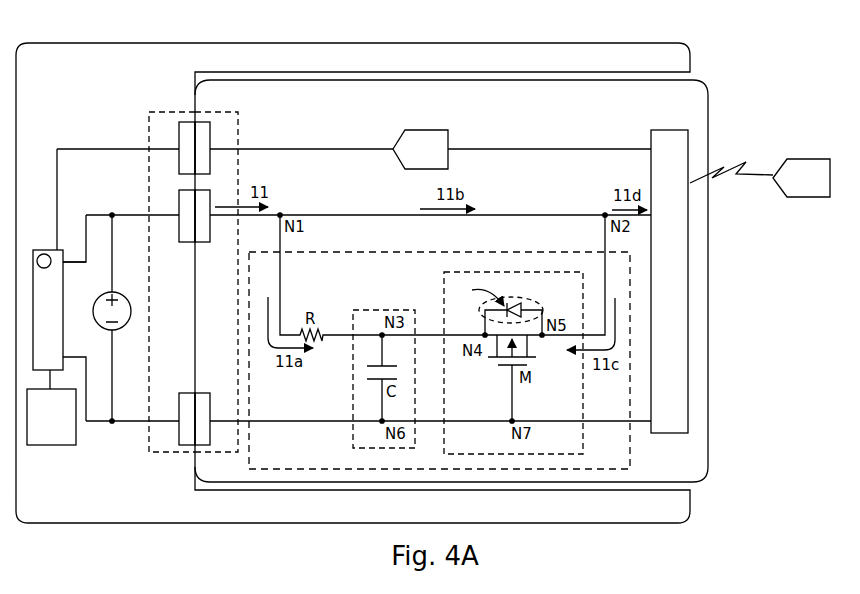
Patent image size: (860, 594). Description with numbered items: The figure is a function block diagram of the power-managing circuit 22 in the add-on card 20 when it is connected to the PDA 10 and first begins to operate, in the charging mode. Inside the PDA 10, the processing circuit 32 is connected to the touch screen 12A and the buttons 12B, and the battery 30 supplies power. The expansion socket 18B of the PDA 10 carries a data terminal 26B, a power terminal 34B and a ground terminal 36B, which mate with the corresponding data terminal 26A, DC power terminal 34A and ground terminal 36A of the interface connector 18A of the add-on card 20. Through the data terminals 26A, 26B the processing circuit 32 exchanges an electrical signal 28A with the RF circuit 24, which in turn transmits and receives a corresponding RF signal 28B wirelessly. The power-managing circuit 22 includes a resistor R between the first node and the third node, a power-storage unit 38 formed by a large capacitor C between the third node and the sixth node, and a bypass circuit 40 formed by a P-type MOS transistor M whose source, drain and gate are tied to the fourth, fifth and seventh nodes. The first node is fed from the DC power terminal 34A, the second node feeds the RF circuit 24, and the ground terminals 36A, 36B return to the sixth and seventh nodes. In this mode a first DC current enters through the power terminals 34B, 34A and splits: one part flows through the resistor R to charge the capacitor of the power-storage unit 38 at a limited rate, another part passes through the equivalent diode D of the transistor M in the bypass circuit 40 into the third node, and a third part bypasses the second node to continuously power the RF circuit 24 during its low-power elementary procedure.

The PDA 10 is at (680, 50).
The add-on card 20 is at (700, 86).
The touch screen 12A is at (66, 421).
The buttons 12B is at (44, 254).
The interface connector 18A is at (240, 115).
The expansion socket 18B is at (149, 127).
The power-managing circuit 22 is at (498, 252).
The RF circuit 24 is at (680, 280).
The data terminal 26A is at (214, 143).
The data terminal 26B is at (176, 153).
The electrical signal 28A is at (443, 159).
The RF signal 28B is at (824, 188).
The battery 30 is at (104, 328).
The processing circuit 32 is at (64, 270).
The DC power terminal 34A is at (207, 244).
The power terminal 34B is at (182, 244).
The ground terminal 36A is at (207, 392).
The ground terminal 36B is at (182, 392).
The power-storage unit 38 is at (368, 310).
The bypass circuit 40 is at (444, 272).